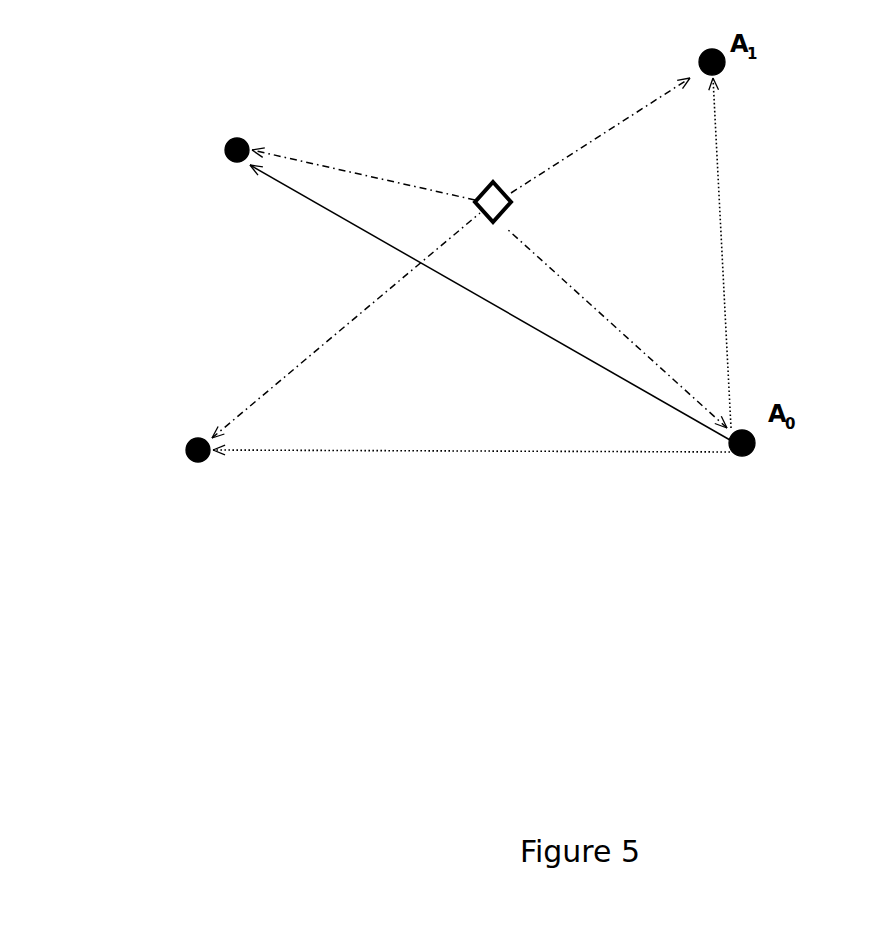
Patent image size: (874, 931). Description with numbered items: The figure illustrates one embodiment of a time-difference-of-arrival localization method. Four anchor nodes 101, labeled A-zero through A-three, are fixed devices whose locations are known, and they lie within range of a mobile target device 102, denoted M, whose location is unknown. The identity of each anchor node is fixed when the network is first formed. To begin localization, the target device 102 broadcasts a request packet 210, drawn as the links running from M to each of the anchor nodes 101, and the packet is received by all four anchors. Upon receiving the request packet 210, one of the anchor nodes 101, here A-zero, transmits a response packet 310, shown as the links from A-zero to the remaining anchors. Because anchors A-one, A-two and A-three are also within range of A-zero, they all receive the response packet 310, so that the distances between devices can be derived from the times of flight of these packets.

The anchor node 101 is at (230, 163).
The target device 102 is at (492, 160).
The request packet 210 is at (358, 173).
The response packet 310 is at (723, 295).